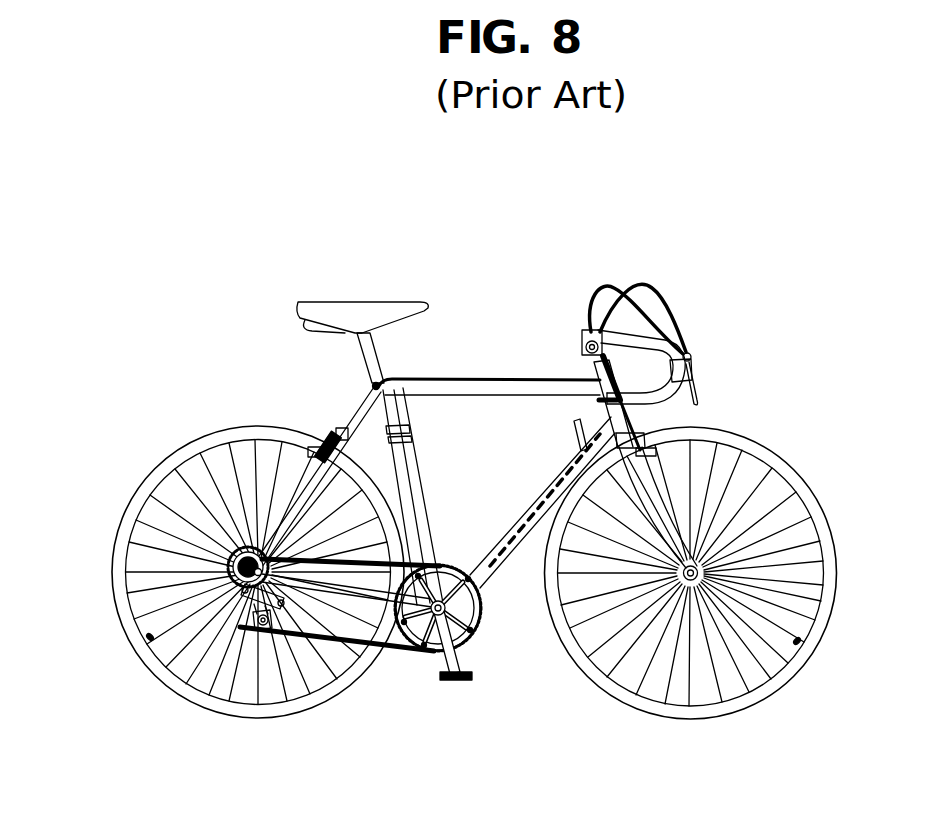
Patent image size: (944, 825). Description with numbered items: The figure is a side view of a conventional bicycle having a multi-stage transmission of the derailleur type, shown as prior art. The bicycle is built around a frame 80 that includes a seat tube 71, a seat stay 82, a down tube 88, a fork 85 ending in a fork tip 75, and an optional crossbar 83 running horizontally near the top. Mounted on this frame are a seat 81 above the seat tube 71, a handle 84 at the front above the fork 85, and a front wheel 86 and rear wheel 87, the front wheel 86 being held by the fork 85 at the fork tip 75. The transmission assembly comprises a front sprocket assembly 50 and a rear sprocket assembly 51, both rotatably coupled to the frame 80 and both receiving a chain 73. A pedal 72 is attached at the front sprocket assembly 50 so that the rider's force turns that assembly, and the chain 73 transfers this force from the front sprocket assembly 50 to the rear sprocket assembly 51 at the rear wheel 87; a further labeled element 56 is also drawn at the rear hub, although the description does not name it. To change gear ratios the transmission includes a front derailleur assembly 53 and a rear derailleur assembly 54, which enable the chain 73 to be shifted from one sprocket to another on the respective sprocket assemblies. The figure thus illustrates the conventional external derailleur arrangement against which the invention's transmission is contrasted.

The frame 80 is at (468, 350).
The seat 81 is at (358, 305).
The seat stay 82 is at (352, 415).
The crossbar 83 is at (525, 392).
The handle 84 is at (699, 372).
The fork 85 is at (647, 507).
The front wheel 86 is at (685, 716).
The rear wheel 87 is at (248, 718).
The down tube 88 is at (490, 560).
The seat tube 71 is at (400, 463).
The fork tip 75 is at (702, 572).
The chain 73 is at (390, 649).
The pedal 72 is at (452, 681).
The front sprocket assembly 50 is at (473, 633).
The front derailleur assembly 53 is at (442, 562).
The rear sprocket assembly 56 is at (226, 576).
The rear sprocket assembly 51 is at (238, 598).
The rear derailleur assembly 54 is at (228, 668).